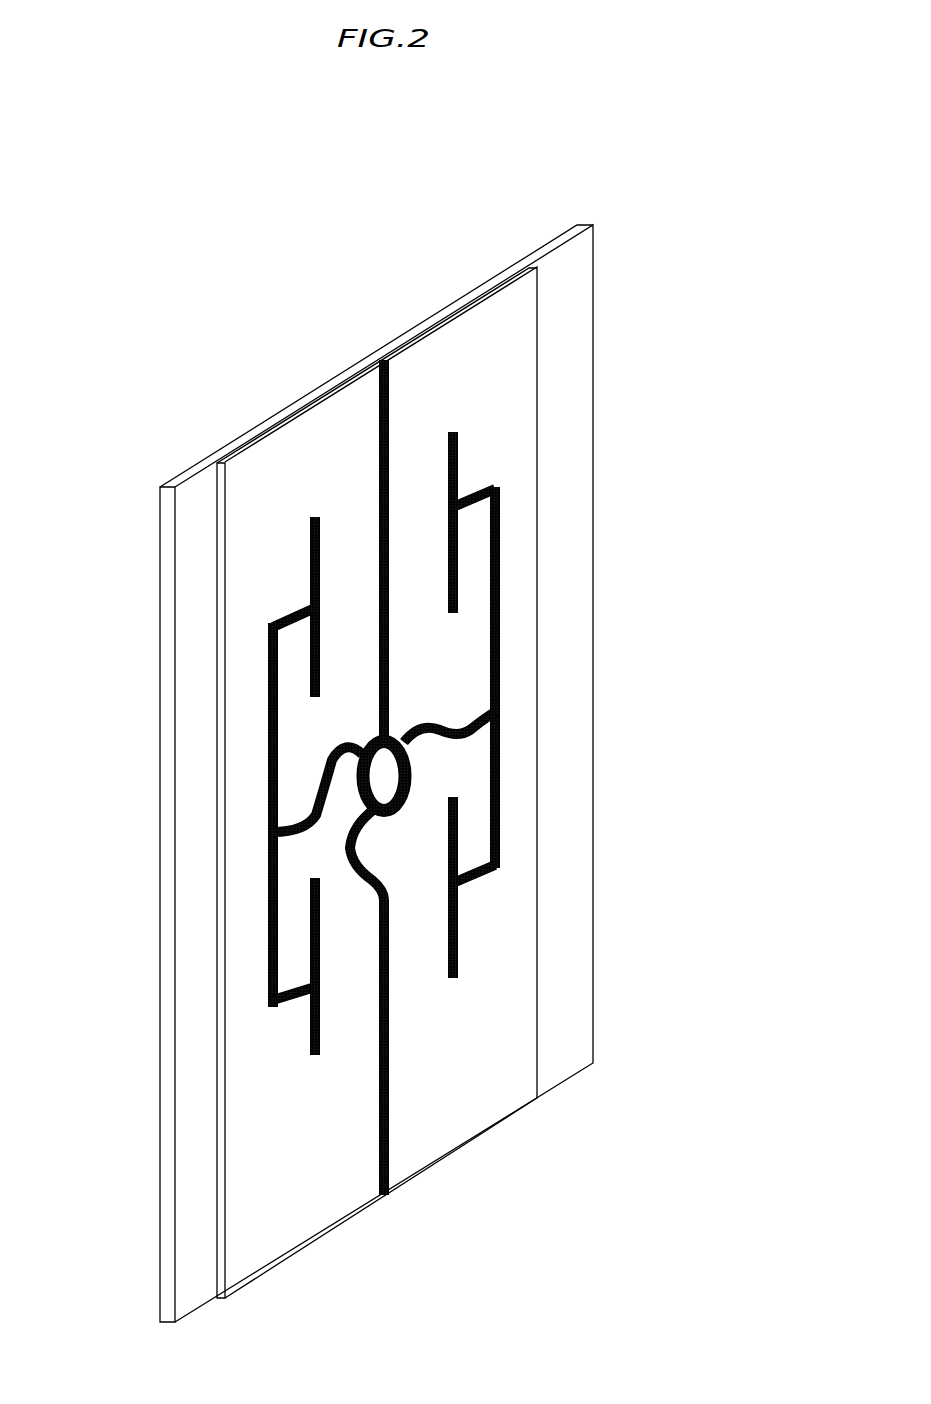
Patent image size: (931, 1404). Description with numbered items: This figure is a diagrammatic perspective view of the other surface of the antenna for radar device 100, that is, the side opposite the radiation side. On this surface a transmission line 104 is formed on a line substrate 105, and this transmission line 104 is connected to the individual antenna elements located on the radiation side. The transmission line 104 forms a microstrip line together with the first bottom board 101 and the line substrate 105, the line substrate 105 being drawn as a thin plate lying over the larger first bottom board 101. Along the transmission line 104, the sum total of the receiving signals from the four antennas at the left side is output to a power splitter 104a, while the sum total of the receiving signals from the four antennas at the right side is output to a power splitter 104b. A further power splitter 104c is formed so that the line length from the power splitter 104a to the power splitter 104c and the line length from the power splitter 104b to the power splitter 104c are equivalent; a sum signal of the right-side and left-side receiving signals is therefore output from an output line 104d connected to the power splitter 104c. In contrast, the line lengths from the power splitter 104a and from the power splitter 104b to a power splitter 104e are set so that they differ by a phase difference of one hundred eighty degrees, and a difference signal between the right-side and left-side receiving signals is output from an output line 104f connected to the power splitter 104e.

The antenna for radar device 100 is at (381, 732).
The first bottom board 101 is at (583, 370).
The line substrate 105 is at (462, 328).
The transmission line 104 is at (381, 777).
The power splitter 104a is at (393, 750).
The power splitter 104b is at (360, 750).
The power splitter 104c is at (378, 735).
The output line 104d is at (377, 493).
The power splitter 104e is at (362, 806).
The output line 104f is at (390, 1033).